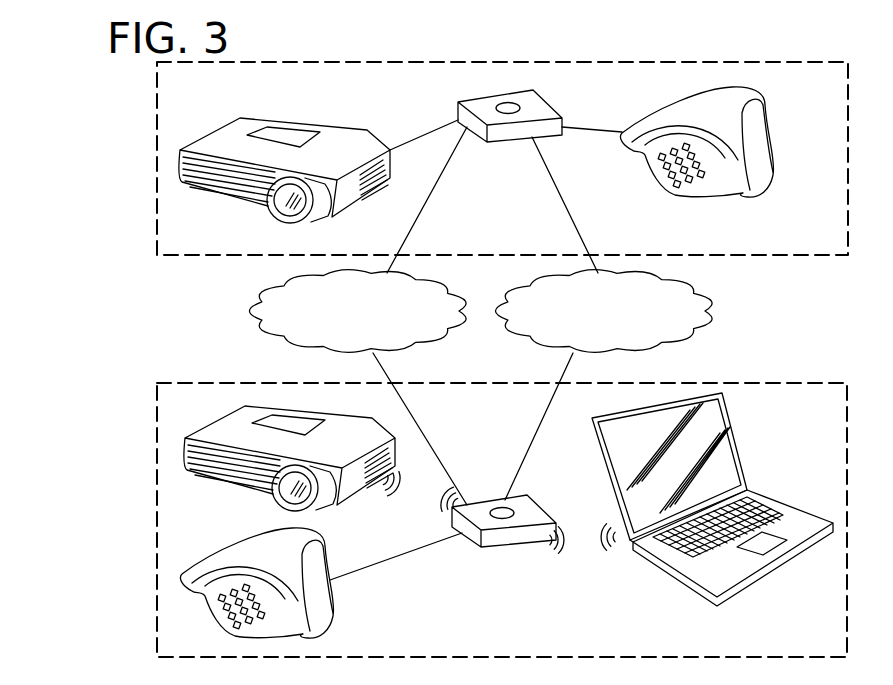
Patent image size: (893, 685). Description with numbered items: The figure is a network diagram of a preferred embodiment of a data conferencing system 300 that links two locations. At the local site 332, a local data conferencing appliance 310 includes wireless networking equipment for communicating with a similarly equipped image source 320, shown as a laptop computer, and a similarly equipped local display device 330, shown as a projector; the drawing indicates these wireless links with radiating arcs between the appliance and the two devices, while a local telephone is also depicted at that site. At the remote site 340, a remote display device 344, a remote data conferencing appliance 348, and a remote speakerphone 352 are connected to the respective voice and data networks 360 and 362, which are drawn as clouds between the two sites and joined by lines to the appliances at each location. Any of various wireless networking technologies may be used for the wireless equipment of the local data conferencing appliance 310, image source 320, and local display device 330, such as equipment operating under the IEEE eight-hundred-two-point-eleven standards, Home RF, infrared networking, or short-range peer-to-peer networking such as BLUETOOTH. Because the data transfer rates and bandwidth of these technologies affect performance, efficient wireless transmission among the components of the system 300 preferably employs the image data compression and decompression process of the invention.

The data conferencing system 300 is at (133, 207).
The local data conferencing appliance 310 is at (500, 537).
The image source 320 is at (737, 446).
The local display device 330 is at (250, 427).
The local site 332 is at (157, 512).
The remote site 340 is at (157, 155).
The remote display device 344 is at (227, 143).
The remote data conferencing appliance 348 is at (540, 107).
The remote speakerphone 352 is at (762, 178).
The voice network 360 is at (713, 302).
The data network 362 is at (255, 305).